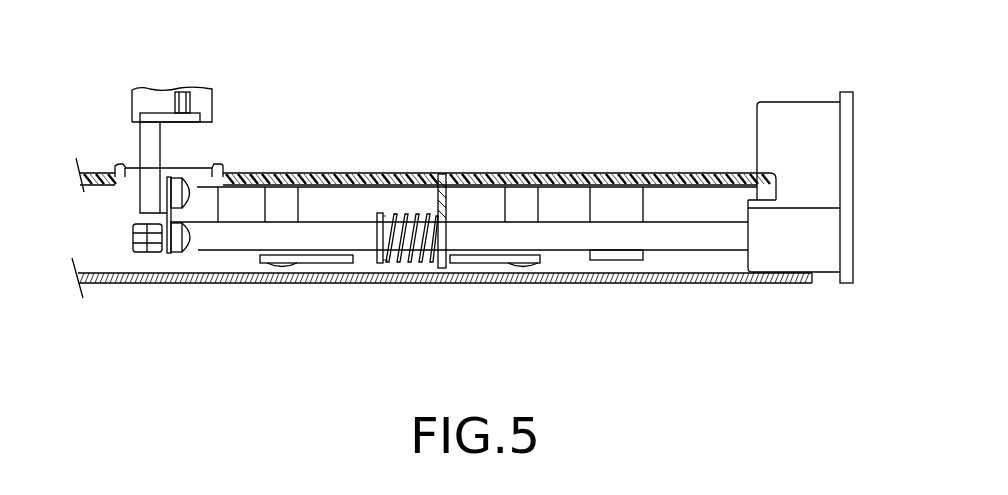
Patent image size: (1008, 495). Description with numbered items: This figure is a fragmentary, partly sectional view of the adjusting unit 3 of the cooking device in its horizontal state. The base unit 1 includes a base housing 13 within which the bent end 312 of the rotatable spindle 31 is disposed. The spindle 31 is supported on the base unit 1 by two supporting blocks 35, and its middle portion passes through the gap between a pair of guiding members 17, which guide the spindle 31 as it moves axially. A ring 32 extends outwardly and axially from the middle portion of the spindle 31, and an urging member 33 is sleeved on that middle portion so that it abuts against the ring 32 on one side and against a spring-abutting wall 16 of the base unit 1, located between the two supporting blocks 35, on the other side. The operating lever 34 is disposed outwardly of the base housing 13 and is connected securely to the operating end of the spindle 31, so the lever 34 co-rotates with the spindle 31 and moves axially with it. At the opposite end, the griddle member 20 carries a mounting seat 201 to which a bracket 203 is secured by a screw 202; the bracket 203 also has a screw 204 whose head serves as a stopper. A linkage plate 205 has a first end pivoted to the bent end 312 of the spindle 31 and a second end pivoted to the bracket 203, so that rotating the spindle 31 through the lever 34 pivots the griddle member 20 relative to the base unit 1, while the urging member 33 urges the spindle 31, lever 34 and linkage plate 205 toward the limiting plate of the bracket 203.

The base unit 1 is at (651, 164).
The adjusting unit 3 is at (358, 212).
The base housing 13 is at (418, 177).
The spring-abutting wall 16 is at (446, 210).
The guiding members 17 is at (632, 255).
The griddle member 20 is at (207, 79).
The mounting seat 201 is at (203, 102).
The screw 202 is at (190, 124).
The bracket 203 is at (143, 142).
The screw 204 is at (237, 177).
The linkage plate 205 is at (142, 212).
The rotatable spindle 31 is at (572, 230).
The bent end 312 is at (172, 243).
The ring 32 is at (375, 258).
The urging member 33 is at (420, 258).
The operating lever 34 is at (847, 160).
The supporting blocks 35 is at (313, 262).